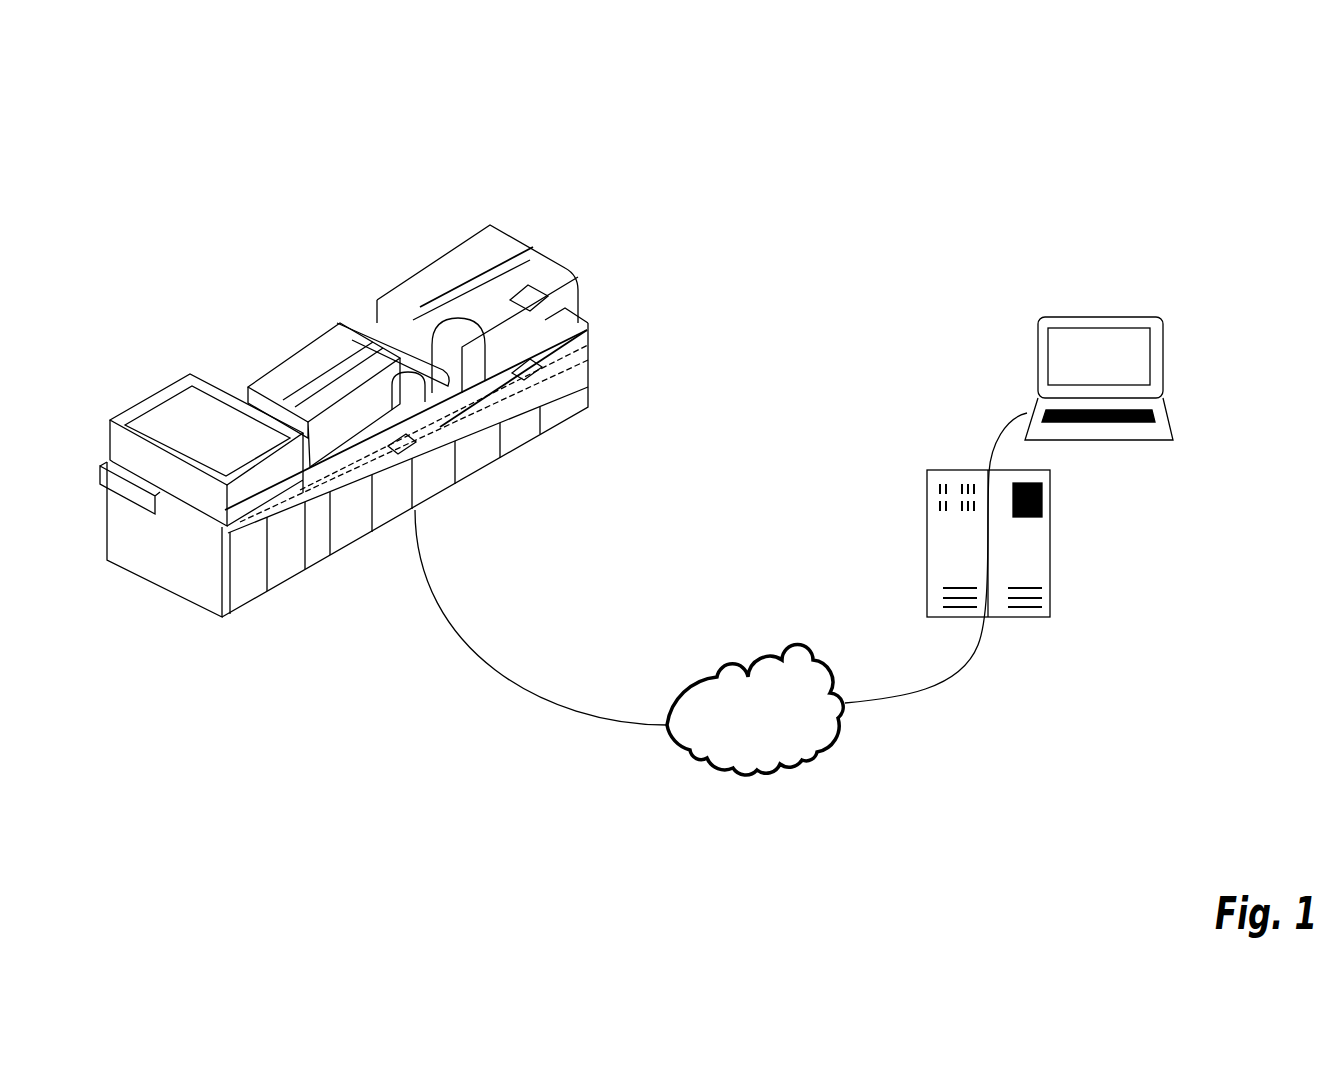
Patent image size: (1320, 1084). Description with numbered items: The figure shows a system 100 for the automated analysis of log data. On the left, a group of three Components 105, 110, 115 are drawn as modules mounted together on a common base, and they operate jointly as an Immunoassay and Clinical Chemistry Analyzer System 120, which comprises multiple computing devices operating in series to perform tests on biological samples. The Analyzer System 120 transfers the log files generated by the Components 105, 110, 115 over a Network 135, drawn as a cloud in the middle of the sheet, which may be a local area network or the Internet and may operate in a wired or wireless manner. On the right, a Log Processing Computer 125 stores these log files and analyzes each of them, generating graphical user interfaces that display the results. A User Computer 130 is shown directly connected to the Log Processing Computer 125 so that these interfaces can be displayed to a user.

The system 100 is at (1203, 119).
The component 105 is at (192, 402).
The component 110 is at (325, 360).
The component 115 is at (453, 267).
The Immunoassay and Clinical Chemistry Analyzer System 120 is at (418, 185).
The log processing computer 125 is at (927, 543).
The user computer 130 is at (1037, 340).
The network 135 is at (793, 643).